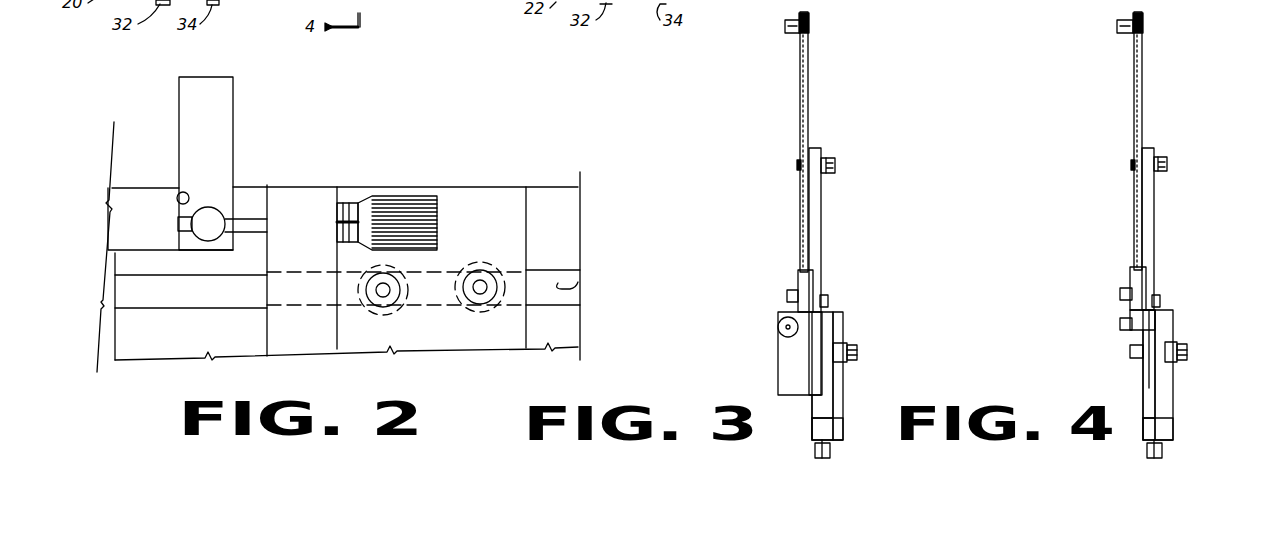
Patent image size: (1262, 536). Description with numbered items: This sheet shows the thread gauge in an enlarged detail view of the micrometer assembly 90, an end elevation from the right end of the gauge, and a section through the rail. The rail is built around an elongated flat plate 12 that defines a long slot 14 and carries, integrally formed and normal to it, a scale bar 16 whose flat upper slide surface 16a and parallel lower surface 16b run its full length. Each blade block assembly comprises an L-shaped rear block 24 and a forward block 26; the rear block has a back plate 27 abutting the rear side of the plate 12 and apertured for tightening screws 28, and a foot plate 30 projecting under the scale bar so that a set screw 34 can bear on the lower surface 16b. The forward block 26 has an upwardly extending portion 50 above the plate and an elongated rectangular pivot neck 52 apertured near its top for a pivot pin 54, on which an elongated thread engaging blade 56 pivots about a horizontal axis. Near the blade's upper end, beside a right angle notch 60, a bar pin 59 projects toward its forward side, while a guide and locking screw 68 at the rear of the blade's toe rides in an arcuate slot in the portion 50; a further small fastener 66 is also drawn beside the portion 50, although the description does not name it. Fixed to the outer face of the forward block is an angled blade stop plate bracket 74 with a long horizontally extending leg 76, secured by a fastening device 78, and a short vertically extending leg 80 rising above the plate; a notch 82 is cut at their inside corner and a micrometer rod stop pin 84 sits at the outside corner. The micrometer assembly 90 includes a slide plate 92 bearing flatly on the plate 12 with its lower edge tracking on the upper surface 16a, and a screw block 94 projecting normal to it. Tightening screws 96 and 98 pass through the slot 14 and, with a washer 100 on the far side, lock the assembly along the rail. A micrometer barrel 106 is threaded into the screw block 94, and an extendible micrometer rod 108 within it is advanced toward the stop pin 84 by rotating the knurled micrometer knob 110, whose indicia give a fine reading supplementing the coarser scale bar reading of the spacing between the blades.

In FIG. 2, the plate 12 is at (556, 229).
In FIG. 3, the plate 12 is at (825, 320).
In FIG. 4, the plate 12 is at (1158, 322).
In FIG. 2, the slot 14 is at (586, 276).
In FIG. 3, the scale bar 16 is at (818, 400).
In FIG. 4, the scale bar 16 is at (1150, 401).
In FIG. 4, the upper slide surface 16a is at (1149, 388).
In FIG. 3, the lower surface 16b is at (817, 418).
In FIG. 4, the lower surface 16b is at (1150, 420).
In FIG. 3, the L-shaped rear block 24 is at (858, 374).
In FIG. 4, the L-shaped rear block 24 is at (1192, 403).
In FIG. 2, the forward block 26 is at (107, 367).
In FIG. 4, the forward block 26 is at (1148, 322).
In FIG. 3, the back plate 27 is at (838, 318).
In FIG. 4, the back plate 27 is at (1173, 380).
In FIG. 4, the tightening screws 28 is at (1188, 352).
In FIG. 3, the foot plate 30 is at (820, 432).
In FIG. 4, the foot plate 30 is at (1152, 432).
In FIG. 3, the set screw 34 is at (831, 450).
In FIG. 4, the set screw 34 is at (1163, 450).
In FIG. 3, the upwardly extending portion 50 is at (815, 283).
In FIG. 4, the upwardly extending portion 50 is at (1147, 282).
In FIG. 3, the pivot neck 52 is at (815, 197).
In FIG. 4, the pivot neck 52 is at (1150, 197).
In FIG. 3, the pivot pin 54 is at (836, 164).
In FIG. 4, the pivot pin 54 is at (1167, 163).
In FIG. 3, the thread engaging blade 56 is at (808, 85).
In FIG. 4, the thread engaging blade 56 is at (1142, 75).
In FIG. 3, the bar pin 59 is at (785, 32).
In FIG. 4, the bar pin 59 is at (1117, 27).
In FIG. 3, the notch 60 is at (809, 24).
In FIG. 4, the notch 60 is at (1143, 24).
In FIG. 3, the fastener 66 is at (787, 295).
In FIG. 4, the fastener 66 is at (1120, 294).
In FIG. 3, the guide and locking screw 68 is at (826, 300).
In FIG. 4, the guide and locking screw 68 is at (1160, 300).
In FIG. 2, the blade stop plate bracket 74 is at (245, 92).
In FIG. 2, the horizontally extending leg 76 is at (147, 226).
In FIG. 4, the horizontally extending leg 76 is at (1137, 332).
In FIG. 4, the fastening device 78 is at (1120, 325).
In FIG. 2, the vertically extending leg 80 is at (210, 121).
In FIG. 2, the notch 82 is at (177, 194).
In FIG. 2, the micrometer rod stop pin 84 is at (205, 235).
In FIG. 2, the micrometer assembly 90 is at (480, 186).
In FIG. 3, the micrometer assembly 90 is at (766, 340).
In FIG. 2, the slide plate 92 is at (450, 333).
In FIG. 3, the slide plate 92 is at (818, 380).
In FIG. 2, the screw block 94 is at (305, 241).
In FIG. 3, the screw block 94 is at (785, 364).
In FIG. 2, the tightening screw 96 is at (482, 290).
In FIG. 3, the tightening screw 96 is at (850, 345).
In FIG. 2, the tightening screw 98 is at (383, 291).
In FIG. 4, the washer 100 is at (1172, 332).
In FIG. 2, the micrometer barrel 106 is at (349, 207).
In FIG. 2, the micrometer rod 108 is at (242, 223).
In FIG. 2, the knurled micrometer knob 110 is at (400, 205).
In FIG. 3, the knurled micrometer knob 110 is at (777, 324).